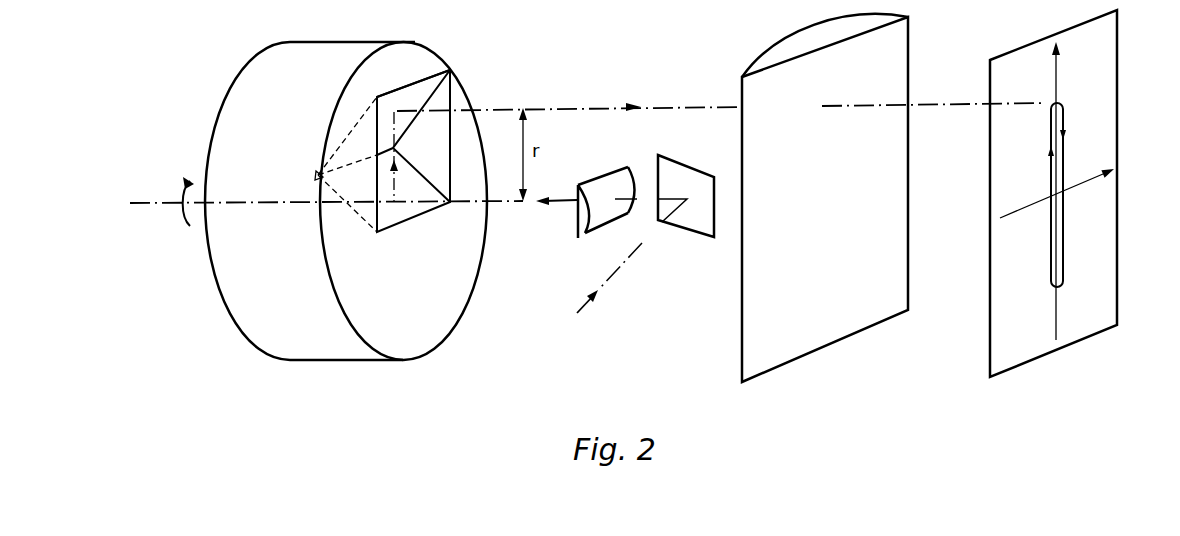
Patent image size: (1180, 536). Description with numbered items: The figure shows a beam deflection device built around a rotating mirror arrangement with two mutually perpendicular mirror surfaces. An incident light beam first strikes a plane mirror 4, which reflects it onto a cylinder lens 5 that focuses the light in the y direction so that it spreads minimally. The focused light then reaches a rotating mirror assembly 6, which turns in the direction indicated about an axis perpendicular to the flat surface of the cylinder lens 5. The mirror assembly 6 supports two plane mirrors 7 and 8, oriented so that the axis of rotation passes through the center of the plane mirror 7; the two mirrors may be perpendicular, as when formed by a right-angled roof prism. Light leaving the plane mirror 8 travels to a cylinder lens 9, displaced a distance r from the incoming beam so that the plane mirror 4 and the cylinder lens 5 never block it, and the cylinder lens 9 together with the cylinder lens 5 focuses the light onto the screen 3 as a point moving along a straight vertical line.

The screen 3 is at (1070, 122).
The plane mirror 4 is at (703, 240).
The cylinder lens 5 is at (585, 237).
The rotating mirror assembly 6 is at (347, 352).
The plane mirror 7 is at (418, 212).
The plane mirror 8 is at (395, 93).
The cylinder lens 9 is at (835, 343).